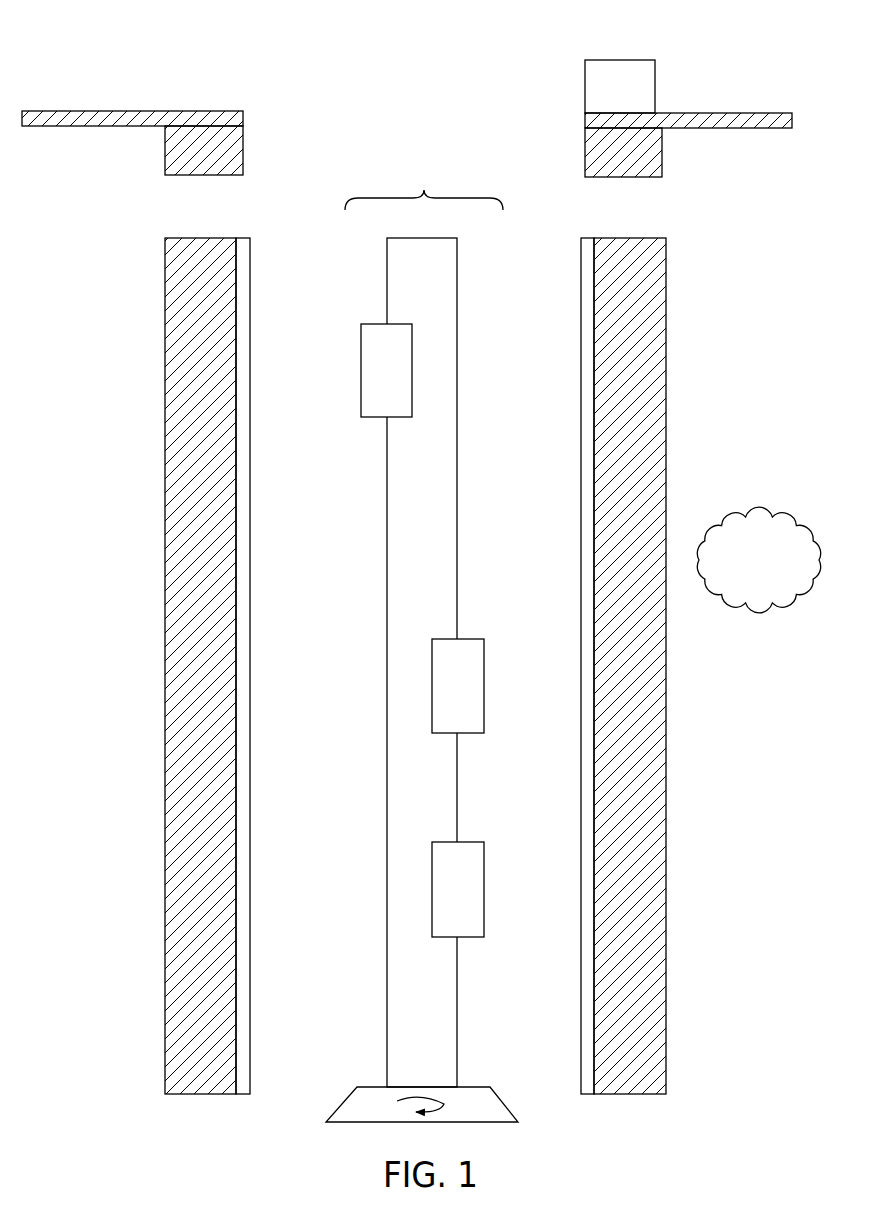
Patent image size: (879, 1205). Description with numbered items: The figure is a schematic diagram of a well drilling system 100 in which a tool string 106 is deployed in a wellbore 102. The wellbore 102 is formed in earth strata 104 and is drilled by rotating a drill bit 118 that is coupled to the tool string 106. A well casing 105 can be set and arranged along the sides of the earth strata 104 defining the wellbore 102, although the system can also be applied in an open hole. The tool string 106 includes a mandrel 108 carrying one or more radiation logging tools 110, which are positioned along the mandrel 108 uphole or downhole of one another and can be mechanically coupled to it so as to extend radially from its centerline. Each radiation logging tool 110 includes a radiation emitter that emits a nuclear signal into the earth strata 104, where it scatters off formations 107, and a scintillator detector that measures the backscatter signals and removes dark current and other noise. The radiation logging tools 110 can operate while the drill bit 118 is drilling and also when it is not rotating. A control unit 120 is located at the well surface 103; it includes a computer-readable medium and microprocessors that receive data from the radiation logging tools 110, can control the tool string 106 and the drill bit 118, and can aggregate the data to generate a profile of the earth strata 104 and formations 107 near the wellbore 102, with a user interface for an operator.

The well drilling system 100 is at (350, 87).
The wellbore 102 is at (498, 130).
The well surface 103 is at (114, 111).
The earth strata 104 is at (163, 661).
The well casing 105 is at (252, 827).
The tool string 106 is at (424, 190).
The formations 107 is at (760, 521).
The mandrel 108 is at (458, 530).
The radiation logging tools 110 is at (361, 357).
The drill bit 118 is at (502, 1104).
The control unit 120 is at (636, 60).